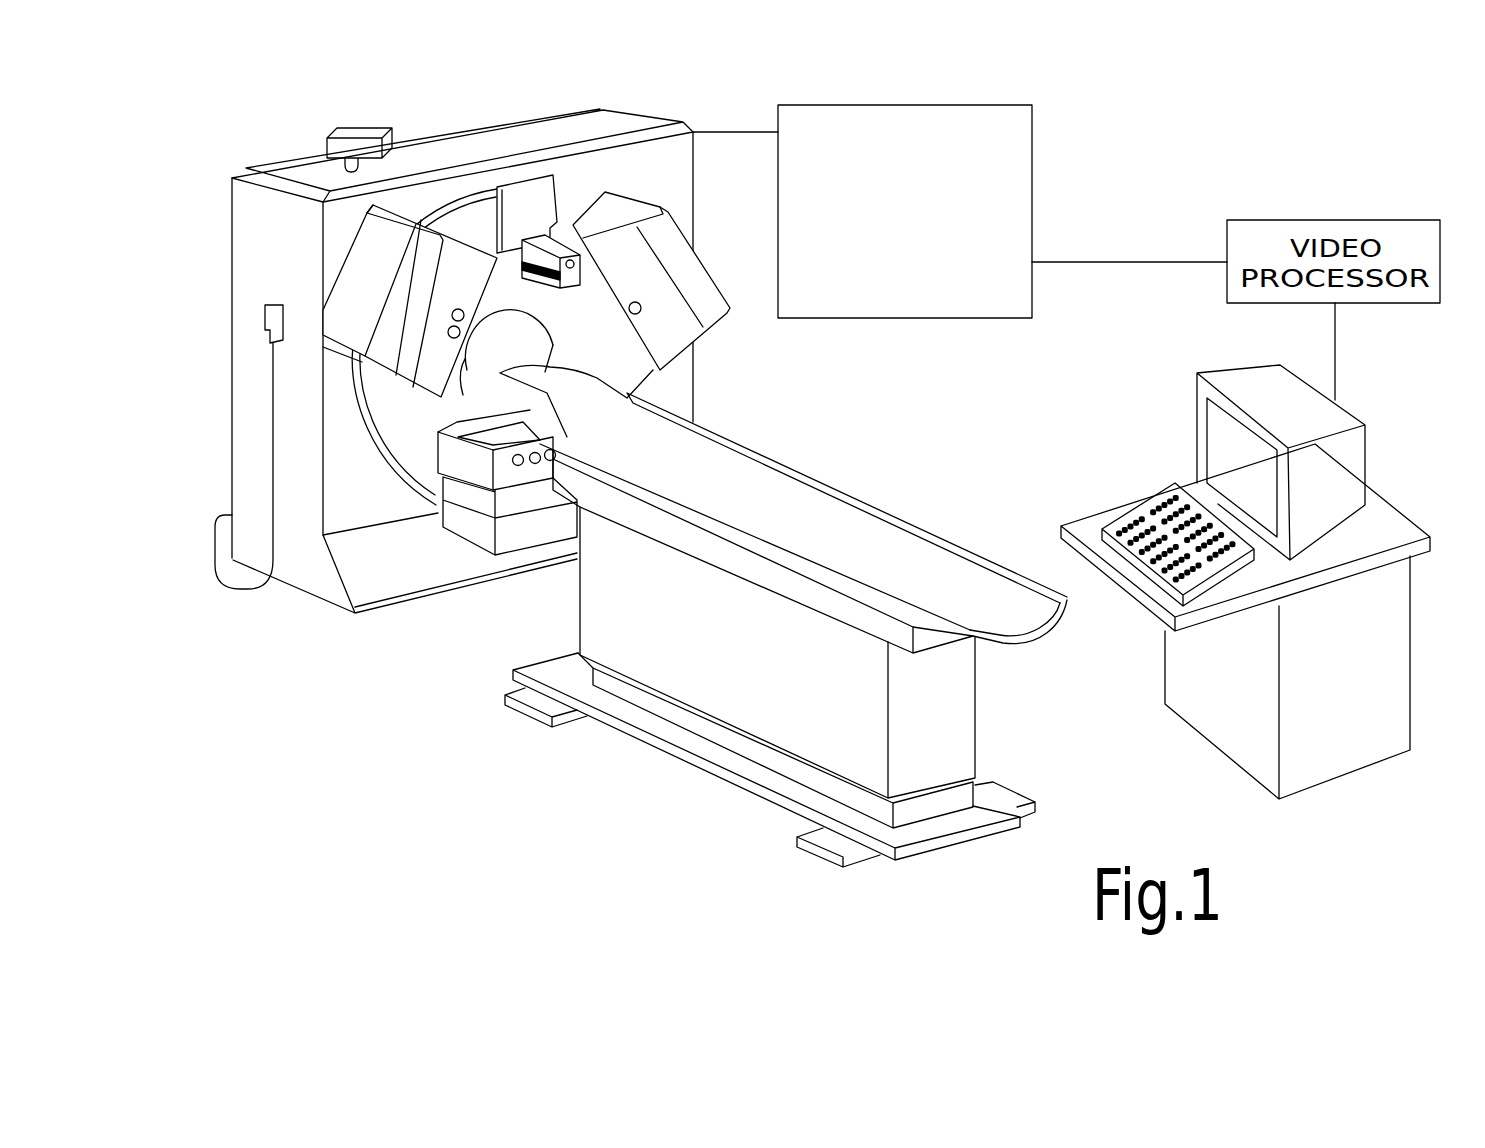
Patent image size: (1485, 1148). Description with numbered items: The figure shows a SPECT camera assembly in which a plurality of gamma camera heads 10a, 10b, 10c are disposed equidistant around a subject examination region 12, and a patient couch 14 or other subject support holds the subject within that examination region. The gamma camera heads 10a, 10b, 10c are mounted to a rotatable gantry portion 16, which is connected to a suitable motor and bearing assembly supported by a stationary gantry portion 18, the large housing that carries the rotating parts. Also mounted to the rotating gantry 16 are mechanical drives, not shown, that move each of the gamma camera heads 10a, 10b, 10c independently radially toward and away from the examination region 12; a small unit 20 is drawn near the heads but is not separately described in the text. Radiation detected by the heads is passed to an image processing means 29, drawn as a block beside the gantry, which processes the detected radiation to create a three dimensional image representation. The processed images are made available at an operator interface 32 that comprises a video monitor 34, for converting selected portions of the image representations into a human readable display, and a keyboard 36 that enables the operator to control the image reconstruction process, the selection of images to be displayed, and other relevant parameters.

The gamma camera head 10a is at (663, 247).
The gamma camera head 10b is at (350, 290).
The gamma camera head 10c is at (520, 537).
The subject examination region 12 is at (468, 396).
The patient couch 14 is at (785, 488).
The rotatable gantry portion 16 is at (640, 387).
The stationary gantry portion 18 is at (613, 122).
The collimator / camera unit 20 is at (581, 190).
The image processing means 29 is at (1032, 167).
The operator interface 32 is at (1180, 426).
The video monitor 34 is at (1343, 472).
The keyboard 36 is at (1158, 501).